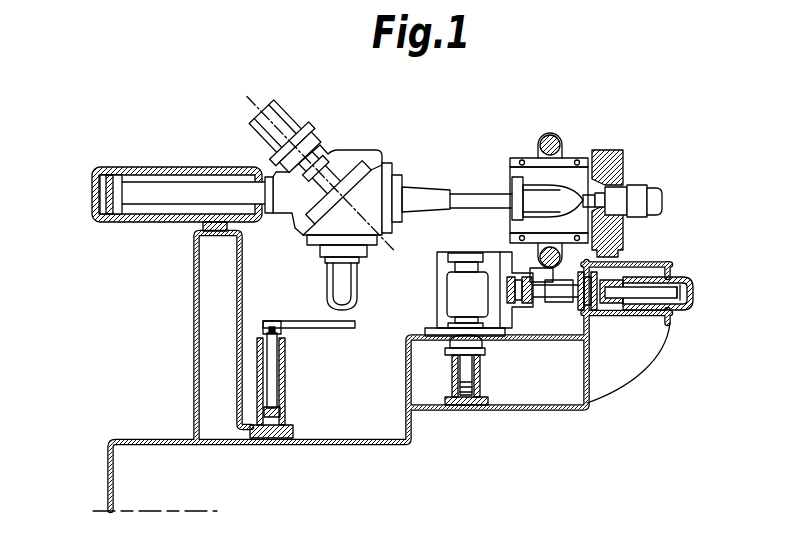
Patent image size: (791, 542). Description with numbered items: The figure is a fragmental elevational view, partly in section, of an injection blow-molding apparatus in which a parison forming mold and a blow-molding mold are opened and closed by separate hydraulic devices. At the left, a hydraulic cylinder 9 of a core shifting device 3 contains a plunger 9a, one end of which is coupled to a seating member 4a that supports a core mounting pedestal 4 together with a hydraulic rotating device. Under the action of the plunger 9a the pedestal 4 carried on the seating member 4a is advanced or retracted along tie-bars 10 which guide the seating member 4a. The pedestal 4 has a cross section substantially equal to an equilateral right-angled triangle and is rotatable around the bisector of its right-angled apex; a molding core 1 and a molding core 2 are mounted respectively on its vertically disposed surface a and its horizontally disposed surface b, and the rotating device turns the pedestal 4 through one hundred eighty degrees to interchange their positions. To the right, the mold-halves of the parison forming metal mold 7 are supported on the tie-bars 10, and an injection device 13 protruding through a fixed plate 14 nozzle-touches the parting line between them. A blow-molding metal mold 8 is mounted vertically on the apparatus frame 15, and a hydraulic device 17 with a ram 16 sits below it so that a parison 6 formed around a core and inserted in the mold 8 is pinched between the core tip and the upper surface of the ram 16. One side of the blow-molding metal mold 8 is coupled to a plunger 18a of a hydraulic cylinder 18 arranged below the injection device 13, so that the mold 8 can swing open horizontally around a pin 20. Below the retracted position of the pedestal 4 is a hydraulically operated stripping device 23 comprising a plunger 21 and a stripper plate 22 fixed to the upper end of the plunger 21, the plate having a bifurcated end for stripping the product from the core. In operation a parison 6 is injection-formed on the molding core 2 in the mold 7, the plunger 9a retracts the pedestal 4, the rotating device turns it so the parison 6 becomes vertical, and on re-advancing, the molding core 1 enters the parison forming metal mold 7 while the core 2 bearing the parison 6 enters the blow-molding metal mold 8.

The molding core 1 is at (433, 186).
The molding core 2 is at (352, 292).
The core shifting device 3 is at (170, 164).
The core mounting pedestal 4 is at (386, 226).
The seating member 4a is at (286, 202).
The parison 6 is at (329, 292).
The parison forming metal mold 7 is at (567, 175).
The blow-molding metal mold 8 is at (442, 292).
The hydraulic cylinder 9 is at (135, 170).
The plunger 9a is at (207, 192).
The tie-bars 10 is at (479, 193).
The injection device 13 is at (640, 185).
The fixed plate 14 is at (612, 152).
The apparatus frame 15 is at (408, 365).
The ram 16 is at (473, 343).
The hydraulic device 17 is at (479, 377).
The hydraulic cylinder 18 is at (681, 278).
The plunger 18a is at (653, 300).
The pin 20 is at (512, 283).
The plunger 21 is at (272, 377).
The stripper plate 22 is at (305, 332).
The stripping device 23 is at (286, 410).
The vertically disposed surface a is at (388, 162).
The horizontally disposed surface b is at (320, 248).